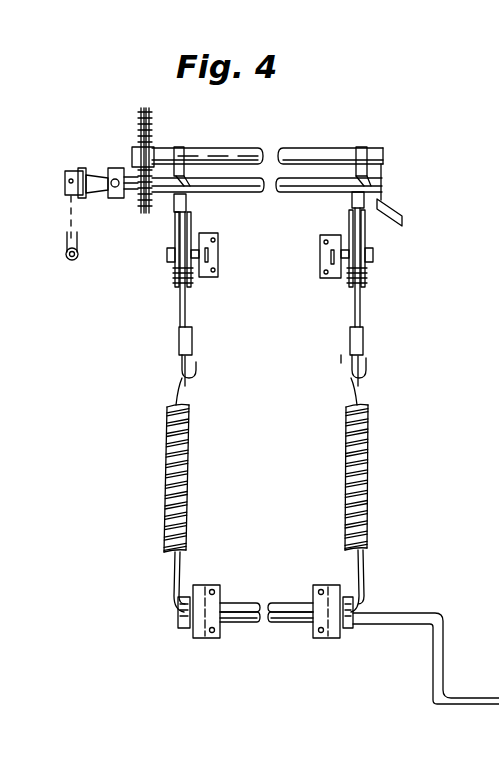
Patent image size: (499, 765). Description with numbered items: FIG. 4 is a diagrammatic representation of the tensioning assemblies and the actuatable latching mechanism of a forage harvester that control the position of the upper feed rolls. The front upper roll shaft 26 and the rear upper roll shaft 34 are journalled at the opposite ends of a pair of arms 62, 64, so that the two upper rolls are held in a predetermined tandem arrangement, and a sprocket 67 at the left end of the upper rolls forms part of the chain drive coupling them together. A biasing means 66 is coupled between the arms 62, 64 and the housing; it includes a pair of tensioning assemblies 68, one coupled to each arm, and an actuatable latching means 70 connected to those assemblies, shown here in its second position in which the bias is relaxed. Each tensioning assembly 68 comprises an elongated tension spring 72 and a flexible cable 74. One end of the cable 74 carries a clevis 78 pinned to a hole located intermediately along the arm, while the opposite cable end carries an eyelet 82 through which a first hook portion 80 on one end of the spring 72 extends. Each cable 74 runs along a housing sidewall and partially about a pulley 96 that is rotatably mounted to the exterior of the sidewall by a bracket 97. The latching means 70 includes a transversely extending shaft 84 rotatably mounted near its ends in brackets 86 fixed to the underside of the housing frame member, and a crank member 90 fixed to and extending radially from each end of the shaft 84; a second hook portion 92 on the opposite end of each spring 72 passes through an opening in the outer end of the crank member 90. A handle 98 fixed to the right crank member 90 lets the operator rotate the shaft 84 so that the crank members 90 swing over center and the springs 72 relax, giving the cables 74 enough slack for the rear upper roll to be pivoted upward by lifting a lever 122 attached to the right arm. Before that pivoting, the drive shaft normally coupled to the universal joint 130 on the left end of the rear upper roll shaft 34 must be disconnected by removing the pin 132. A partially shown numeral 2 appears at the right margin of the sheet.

The vehicle 2 is at (493, 493).
The front upper feed roll shaft 26 is at (286, 148).
The rear upper feed roll shaft 34 is at (284, 194).
The arm 62 is at (358, 148).
The arm 64 is at (181, 148).
The biasing means 66 is at (396, 334).
The sprocket 67 is at (150, 120).
The tensioning assembly 68 is at (258, 477).
The actuatable latching means 70 is at (276, 674).
The tension spring 72 is at (190, 486).
The flexible cable 74 is at (180, 310).
The clevis 78 is at (188, 202).
The first hook portion 80 is at (198, 372).
The eyelet 82 is at (178, 362).
The shaft 84 is at (280, 625).
The bracket 86 is at (206, 638).
The crank member 90 is at (178, 626).
The second hook portion 92 is at (172, 584).
The pulley 96 is at (175, 241).
The bracket 97 is at (218, 245).
The handle 98 is at (454, 696).
The lever 122 is at (402, 211).
The universal joint 130 is at (118, 156).
The pin 132 is at (78, 231).